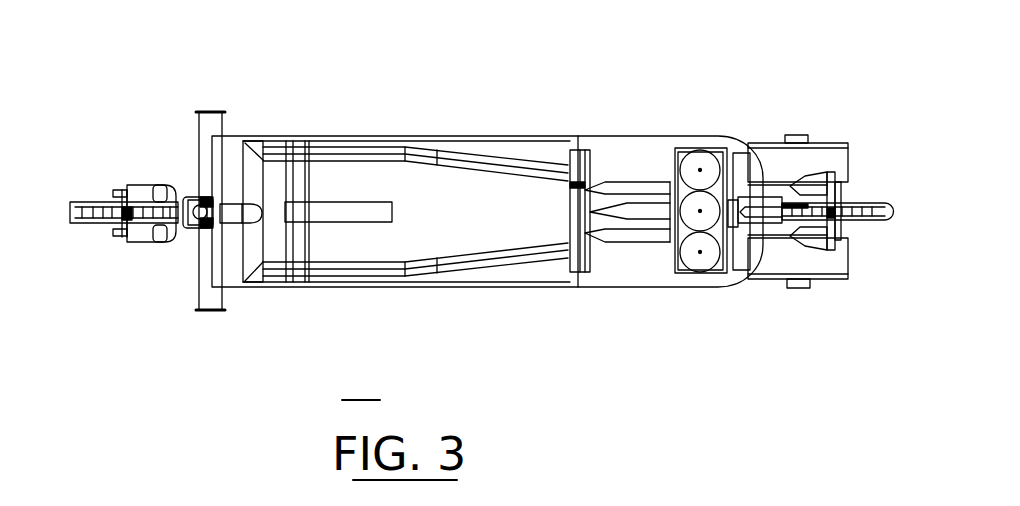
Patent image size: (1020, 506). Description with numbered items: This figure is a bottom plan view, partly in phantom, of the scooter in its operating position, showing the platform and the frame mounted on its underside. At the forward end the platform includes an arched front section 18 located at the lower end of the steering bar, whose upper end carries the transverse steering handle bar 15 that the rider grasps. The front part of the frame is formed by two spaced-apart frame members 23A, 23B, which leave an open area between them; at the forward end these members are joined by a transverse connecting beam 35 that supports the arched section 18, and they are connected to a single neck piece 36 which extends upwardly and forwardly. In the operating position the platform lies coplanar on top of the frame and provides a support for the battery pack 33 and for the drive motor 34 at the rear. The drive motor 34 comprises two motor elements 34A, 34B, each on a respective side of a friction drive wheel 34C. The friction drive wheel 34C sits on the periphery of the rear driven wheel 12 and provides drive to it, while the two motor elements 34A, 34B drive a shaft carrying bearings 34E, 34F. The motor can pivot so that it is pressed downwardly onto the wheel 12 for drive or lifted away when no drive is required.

The rear driven wheel 12 is at (863, 203).
The transverse steering handle bar 15 is at (208, 112).
The arched front section 18 is at (236, 167).
The frame member 23A is at (405, 150).
The frame member 23B is at (415, 268).
The battery pack 33 is at (685, 155).
The drive motor 34 is at (830, 218).
The motor element 34A is at (840, 258).
The motor element 34B is at (848, 158).
The friction drive wheel 34C is at (793, 218).
The bearing 34E is at (805, 288).
The bearing 34F is at (795, 133).
The transverse connecting beam 35 is at (252, 250).
The neck piece 36 is at (336, 203).